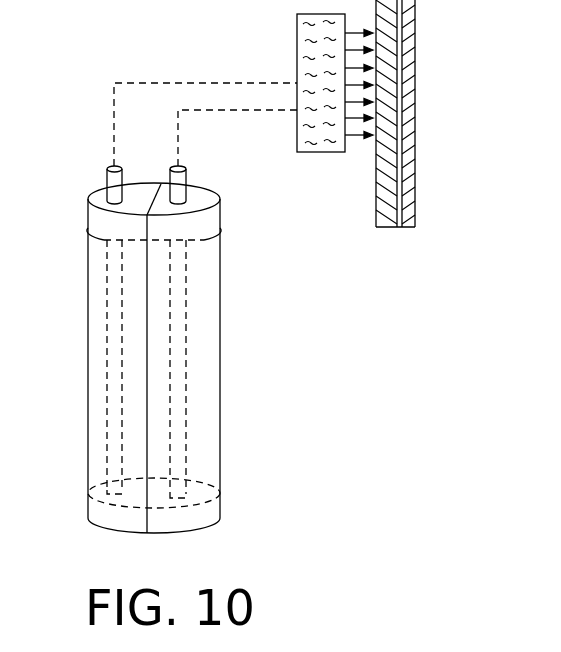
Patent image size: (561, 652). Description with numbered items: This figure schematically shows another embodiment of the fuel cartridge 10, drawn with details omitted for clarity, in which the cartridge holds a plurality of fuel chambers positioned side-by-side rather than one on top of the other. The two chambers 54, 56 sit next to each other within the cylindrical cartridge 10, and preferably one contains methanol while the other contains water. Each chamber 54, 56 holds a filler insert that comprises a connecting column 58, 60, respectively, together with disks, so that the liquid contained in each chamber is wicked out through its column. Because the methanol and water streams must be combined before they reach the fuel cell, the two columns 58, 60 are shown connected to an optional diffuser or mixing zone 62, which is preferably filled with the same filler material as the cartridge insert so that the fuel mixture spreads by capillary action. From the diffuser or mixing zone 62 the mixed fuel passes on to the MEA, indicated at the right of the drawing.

The fuel cartridge 10 is at (244, 244).
The chamber 54 is at (103, 450).
The chamber 56 is at (200, 450).
The connecting column 58 is at (110, 182).
The connecting column 60 is at (190, 178).
The diffuser or mixing zone 62 is at (325, 140).
The element MEA is at (386, 244).